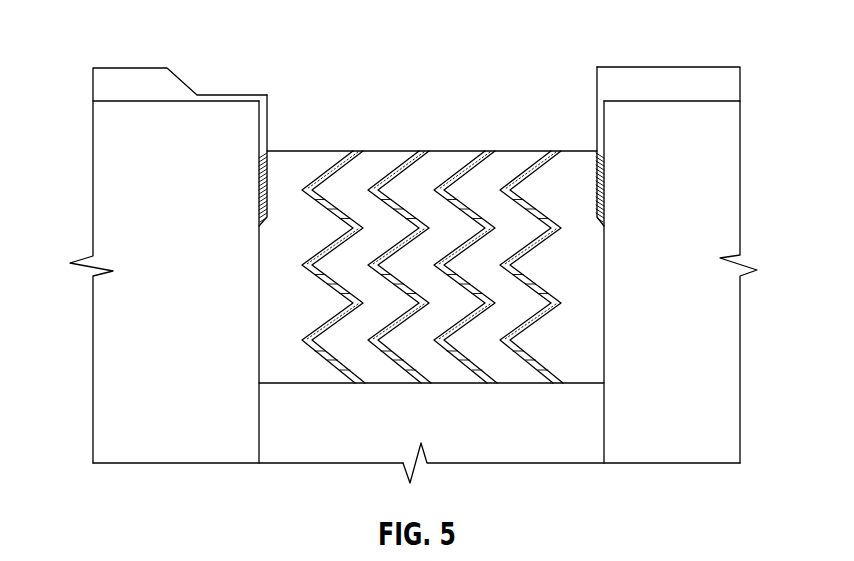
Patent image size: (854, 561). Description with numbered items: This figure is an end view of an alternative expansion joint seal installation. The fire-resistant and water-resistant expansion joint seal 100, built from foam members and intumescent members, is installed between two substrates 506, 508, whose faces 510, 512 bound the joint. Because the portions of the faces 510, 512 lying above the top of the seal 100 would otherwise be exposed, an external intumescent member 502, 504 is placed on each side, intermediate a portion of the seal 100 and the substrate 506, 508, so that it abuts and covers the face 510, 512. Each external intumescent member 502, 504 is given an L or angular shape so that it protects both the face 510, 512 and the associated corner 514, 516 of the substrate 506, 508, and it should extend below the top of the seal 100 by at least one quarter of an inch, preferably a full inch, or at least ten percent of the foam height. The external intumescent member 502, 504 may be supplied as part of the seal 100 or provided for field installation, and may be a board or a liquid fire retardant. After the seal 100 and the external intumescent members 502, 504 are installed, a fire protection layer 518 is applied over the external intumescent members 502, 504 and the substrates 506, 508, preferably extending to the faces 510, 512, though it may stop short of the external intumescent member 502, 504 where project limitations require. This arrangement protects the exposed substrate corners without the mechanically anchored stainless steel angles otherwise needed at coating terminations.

The fire-resistant and water-resistant expansion joint seal 100 is at (116, 40).
The external intumescent member 502 is at (596, 112).
The external intumescent member 504 is at (268, 96).
The substrate 506 is at (197, 244).
The substrate 508 is at (687, 246).
The face of the substrate 510 is at (261, 440).
The face of the substrate 512 is at (603, 440).
The corner of the substrate 514 is at (606, 103).
The corner of the substrate 516 is at (257, 104).
The fire protection layer 518 is at (152, 94).